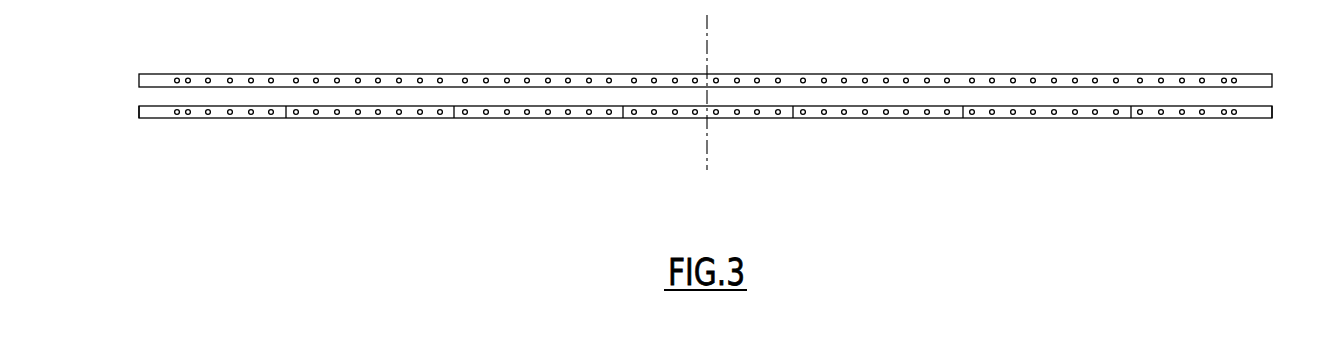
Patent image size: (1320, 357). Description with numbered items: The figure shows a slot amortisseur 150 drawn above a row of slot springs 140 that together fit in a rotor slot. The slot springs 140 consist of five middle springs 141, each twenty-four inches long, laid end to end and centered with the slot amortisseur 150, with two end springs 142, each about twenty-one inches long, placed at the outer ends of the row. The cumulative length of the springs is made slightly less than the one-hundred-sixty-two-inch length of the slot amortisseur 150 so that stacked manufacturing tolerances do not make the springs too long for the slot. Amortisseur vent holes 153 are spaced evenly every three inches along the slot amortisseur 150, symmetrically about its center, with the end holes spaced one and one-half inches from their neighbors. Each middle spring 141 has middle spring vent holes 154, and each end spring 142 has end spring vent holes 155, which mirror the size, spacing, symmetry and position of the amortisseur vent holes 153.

The slot springs 140 is at (262, 145).
The middle springs 141 is at (306, 113).
The end springs 142 is at (162, 113).
The slot amortisseur 150 is at (812, 78).
The amortisseur vent holes 153 is at (467, 78).
The middle spring vent holes 154 is at (399, 113).
The end spring vent holes 155 is at (190, 113).